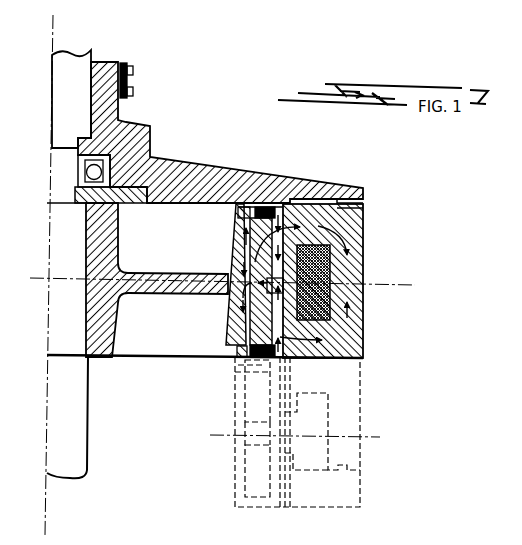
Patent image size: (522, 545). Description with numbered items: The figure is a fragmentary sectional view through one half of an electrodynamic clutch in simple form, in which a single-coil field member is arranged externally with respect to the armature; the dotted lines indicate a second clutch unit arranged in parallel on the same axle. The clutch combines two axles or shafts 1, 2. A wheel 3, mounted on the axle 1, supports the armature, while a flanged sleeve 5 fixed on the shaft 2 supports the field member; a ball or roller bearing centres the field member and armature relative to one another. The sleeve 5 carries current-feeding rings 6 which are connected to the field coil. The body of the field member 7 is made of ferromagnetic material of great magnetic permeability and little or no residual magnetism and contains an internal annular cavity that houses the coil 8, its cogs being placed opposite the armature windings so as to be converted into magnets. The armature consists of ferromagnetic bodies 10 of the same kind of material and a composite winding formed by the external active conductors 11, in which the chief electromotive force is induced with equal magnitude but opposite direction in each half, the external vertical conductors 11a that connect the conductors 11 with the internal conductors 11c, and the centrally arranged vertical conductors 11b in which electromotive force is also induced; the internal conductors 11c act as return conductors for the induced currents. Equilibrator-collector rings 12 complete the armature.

The axle or shaft 1 is at (77, 427).
The axle or shaft 2 is at (82, 52).
The wheel 3 is at (147, 285).
The flanged sleeve 5 is at (165, 167).
The current-feeding rings 6 is at (134, 80).
The body of the field member 7 is at (365, 218).
The coil of the field member 8 is at (335, 270).
The body of the armature 10 is at (250, 222).
The external active conductors 11 is at (297, 193).
The external vertical conductors 11a is at (266, 205).
The centrally arranged vertical conductors 11b is at (238, 258).
The internal conductors 11c is at (262, 290).
The equilibrator-collector rings 12 is at (262, 207).